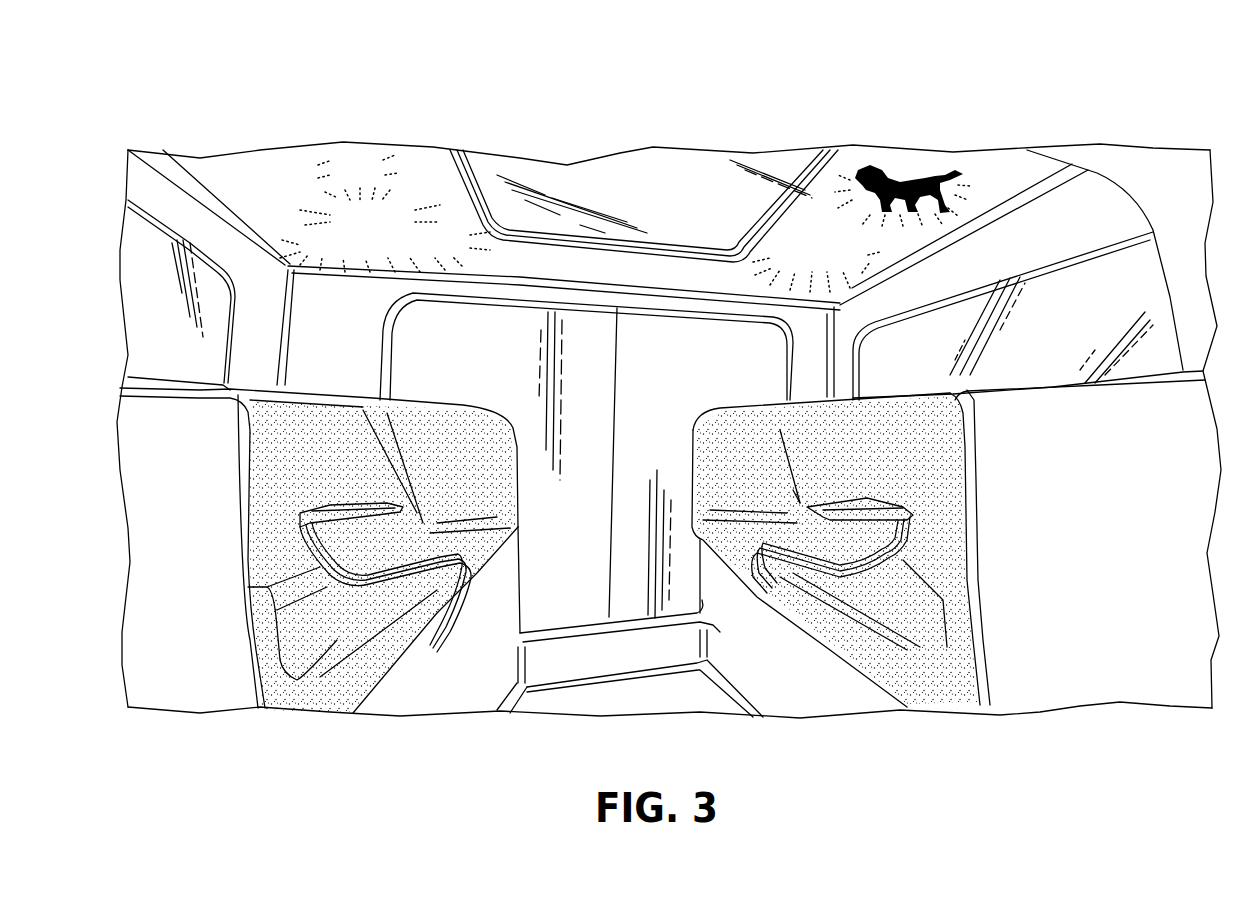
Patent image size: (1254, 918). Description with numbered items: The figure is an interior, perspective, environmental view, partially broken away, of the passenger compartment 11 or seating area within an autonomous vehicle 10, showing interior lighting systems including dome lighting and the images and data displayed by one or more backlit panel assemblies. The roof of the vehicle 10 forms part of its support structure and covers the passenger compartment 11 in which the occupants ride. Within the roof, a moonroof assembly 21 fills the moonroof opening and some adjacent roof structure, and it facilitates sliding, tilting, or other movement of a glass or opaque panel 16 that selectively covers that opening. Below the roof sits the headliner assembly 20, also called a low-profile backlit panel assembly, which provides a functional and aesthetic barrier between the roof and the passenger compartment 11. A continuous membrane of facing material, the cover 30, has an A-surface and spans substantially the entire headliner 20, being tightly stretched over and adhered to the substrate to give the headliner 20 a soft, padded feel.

The autonomous vehicle 10 is at (856, 76).
The passenger compartment 11 is at (713, 377).
The glass or opaque panel 16 is at (610, 172).
The headliner assembly 20 is at (283, 172).
The moonroof assembly 21 is at (652, 184).
The cover 30 is at (1003, 160).